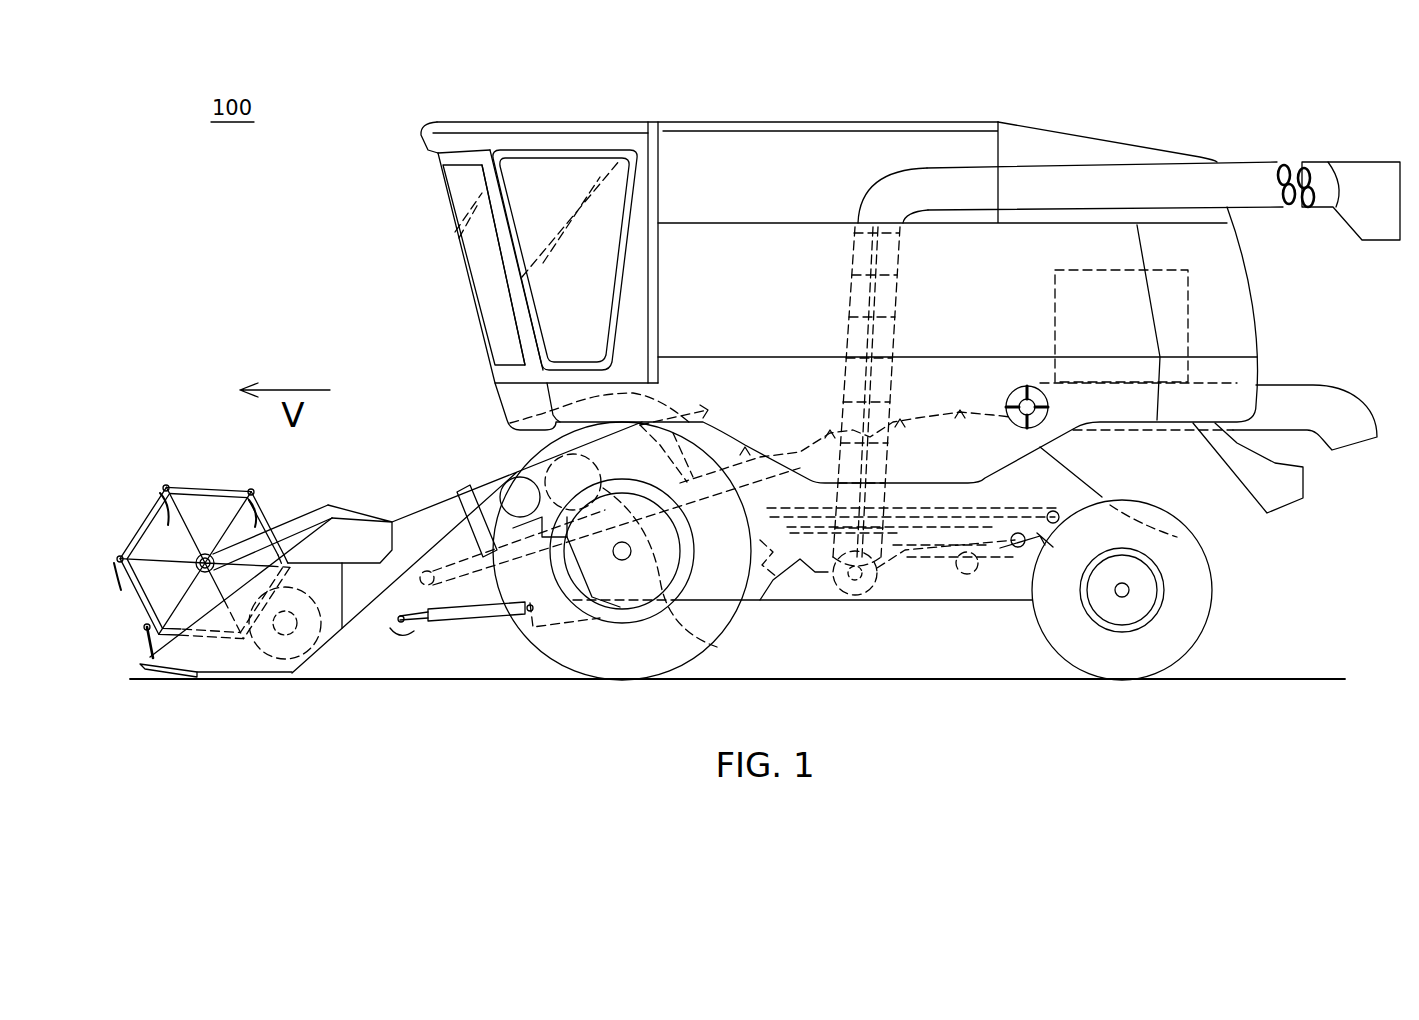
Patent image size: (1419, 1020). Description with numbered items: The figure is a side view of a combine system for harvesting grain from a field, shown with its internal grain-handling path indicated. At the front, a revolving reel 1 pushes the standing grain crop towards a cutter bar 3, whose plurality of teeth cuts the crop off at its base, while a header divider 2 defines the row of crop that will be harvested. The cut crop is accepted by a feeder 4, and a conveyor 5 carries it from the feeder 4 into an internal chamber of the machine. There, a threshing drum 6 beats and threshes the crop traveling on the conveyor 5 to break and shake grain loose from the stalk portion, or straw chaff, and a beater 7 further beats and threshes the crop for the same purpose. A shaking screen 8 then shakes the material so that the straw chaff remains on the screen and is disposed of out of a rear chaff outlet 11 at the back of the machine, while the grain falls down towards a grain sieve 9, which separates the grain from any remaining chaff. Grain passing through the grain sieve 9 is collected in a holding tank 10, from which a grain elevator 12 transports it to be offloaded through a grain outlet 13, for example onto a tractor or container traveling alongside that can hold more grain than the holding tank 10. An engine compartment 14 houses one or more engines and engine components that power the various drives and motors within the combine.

The revolving reel 1 is at (156, 512).
The header divider 2 is at (173, 650).
The cutter bar 3 is at (146, 668).
The feeder 4 is at (415, 535).
The conveyor 5 is at (457, 553).
The threshing drum 6 is at (716, 646).
The beater 7 is at (508, 423).
The shaking screen 8 is at (885, 440).
The grain sieve 9 is at (960, 510).
The holding tank 10 is at (815, 567).
The rear chaff outlet 11 is at (1347, 423).
The grain elevator 12 is at (852, 263).
The grain outlet 13 is at (1367, 226).
The engine compartment 14 is at (1188, 333).